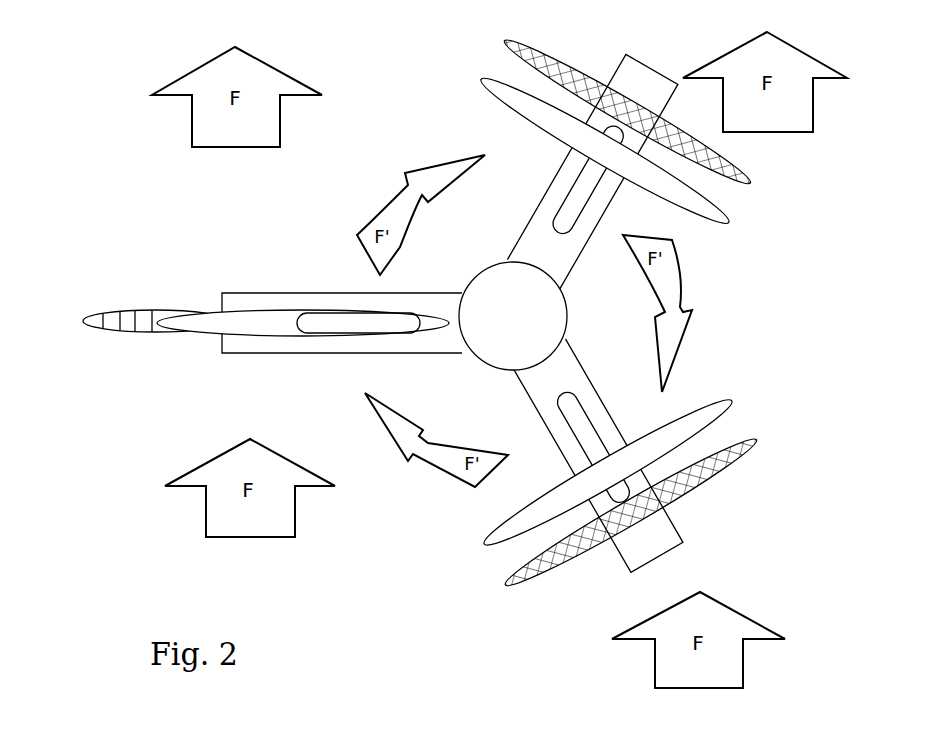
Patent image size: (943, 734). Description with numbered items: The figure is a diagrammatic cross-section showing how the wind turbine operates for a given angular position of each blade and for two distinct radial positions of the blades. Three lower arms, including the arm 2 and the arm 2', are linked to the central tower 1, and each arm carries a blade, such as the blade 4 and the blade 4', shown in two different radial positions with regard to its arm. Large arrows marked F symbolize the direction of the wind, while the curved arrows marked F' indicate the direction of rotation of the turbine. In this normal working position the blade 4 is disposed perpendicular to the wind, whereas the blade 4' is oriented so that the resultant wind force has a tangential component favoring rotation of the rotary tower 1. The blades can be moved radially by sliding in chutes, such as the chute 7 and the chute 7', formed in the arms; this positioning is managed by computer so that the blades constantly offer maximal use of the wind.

The central tower 1 is at (483, 376).
The lower arm 2 is at (319, 365).
The lower arm 2' is at (597, 456).
The blade 4 is at (155, 281).
The blade 4' is at (664, 481).
The chute 7 is at (358, 362).
The chute 7' is at (563, 447).